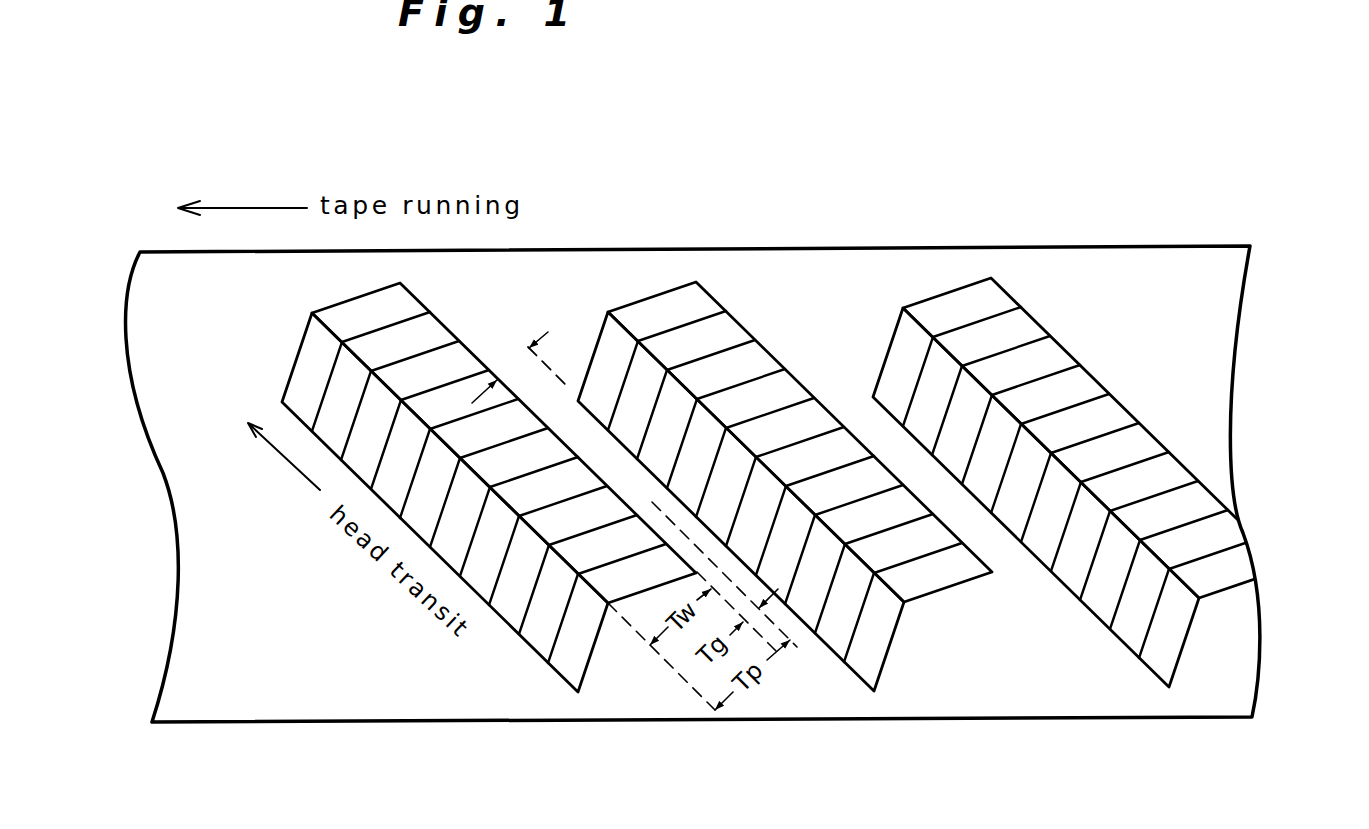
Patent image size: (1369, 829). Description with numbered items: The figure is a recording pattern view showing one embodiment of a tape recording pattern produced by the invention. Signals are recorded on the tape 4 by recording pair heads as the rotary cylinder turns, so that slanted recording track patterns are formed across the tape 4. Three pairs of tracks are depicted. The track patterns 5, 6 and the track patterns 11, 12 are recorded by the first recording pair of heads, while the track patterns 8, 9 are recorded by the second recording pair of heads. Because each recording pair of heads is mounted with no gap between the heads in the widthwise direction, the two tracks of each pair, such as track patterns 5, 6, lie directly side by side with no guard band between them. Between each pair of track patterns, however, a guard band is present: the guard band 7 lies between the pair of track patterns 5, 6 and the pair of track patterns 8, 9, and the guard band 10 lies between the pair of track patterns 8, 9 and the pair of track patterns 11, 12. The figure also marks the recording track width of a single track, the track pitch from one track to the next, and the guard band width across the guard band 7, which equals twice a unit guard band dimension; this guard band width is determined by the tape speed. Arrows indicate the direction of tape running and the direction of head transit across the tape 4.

The tape 4 is at (562, 250).
The track pattern 5 is at (590, 662).
The track pattern 6 is at (647, 592).
The guard band 7 is at (542, 393).
The track pattern 8 is at (892, 647).
The track pattern 9 is at (957, 586).
The guard band 10 is at (957, 508).
The track pattern 11 is at (1183, 657).
The track pattern 12 is at (1228, 588).